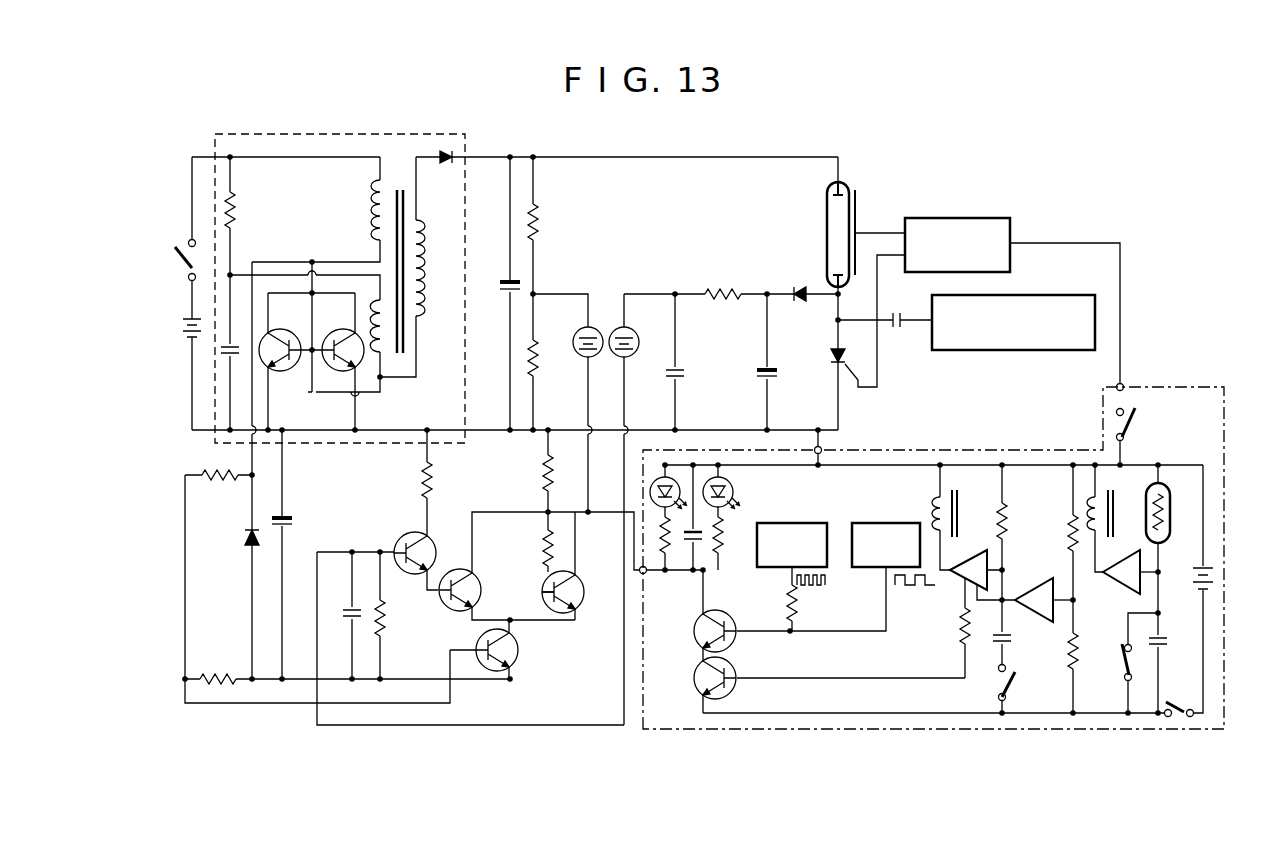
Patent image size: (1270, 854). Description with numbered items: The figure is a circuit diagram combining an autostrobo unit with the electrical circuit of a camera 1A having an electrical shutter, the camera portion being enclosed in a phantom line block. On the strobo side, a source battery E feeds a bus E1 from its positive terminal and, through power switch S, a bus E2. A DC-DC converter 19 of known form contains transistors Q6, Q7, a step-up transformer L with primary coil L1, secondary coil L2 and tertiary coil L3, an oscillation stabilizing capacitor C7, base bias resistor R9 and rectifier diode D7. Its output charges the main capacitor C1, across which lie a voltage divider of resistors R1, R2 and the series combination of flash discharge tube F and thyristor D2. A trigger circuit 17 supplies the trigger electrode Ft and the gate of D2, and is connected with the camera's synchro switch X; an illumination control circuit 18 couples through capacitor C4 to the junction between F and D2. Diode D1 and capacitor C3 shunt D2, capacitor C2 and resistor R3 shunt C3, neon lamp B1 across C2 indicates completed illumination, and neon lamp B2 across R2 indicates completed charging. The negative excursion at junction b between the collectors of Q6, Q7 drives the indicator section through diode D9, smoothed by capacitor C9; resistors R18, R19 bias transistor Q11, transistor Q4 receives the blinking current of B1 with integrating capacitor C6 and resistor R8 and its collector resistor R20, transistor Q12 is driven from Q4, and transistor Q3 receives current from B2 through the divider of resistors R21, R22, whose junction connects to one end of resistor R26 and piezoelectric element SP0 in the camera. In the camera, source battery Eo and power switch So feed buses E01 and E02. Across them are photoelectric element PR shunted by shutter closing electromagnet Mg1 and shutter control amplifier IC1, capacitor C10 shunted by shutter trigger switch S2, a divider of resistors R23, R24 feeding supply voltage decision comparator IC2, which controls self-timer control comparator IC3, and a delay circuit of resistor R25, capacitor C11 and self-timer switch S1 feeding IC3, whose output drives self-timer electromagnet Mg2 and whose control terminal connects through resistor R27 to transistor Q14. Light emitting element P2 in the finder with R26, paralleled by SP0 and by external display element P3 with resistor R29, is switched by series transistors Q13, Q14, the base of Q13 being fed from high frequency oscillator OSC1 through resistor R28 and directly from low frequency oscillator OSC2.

The DC-DC converter 19 is at (370, 133).
The bus E2 is at (317, 159).
The bus E1 is at (188, 440).
The power switch S is at (180, 258).
The source battery E is at (183, 325).
The base bias resistor R9 is at (236, 226).
The oscillation stabilizing capacitor C7 is at (214, 350).
The step-up transformer L is at (401, 184).
The tertiary coil L3 is at (370, 222).
The secondary coil L2 is at (425, 228).
The primary coil L1 is at (385, 368).
The rectifier diode D7 is at (447, 164).
The junction b is at (312, 340).
The transistor Q6 is at (283, 330).
The transistor Q7 is at (343, 330).
The main capacitor C1 is at (500, 285).
The resistor R1 is at (538, 232).
The resistor R2 is at (538, 366).
The neon lamp B2 is at (574, 336).
The neon lamp B1 is at (634, 333).
The resistor R3 is at (722, 291).
The capacitor C2 is at (684, 376).
The capacitor C3 is at (778, 374).
The diode D1 is at (792, 290).
The flash discharge tube F is at (826, 233).
The trigger electrode Ft is at (857, 200).
The main switching element D2 is at (830, 355).
The trigger circuit 17 is at (961, 218).
The capacitor C4 is at (897, 328).
The illumination control circuit 18 is at (1004, 351).
The switch X is at (1127, 425).
The resistor R18 is at (222, 480).
The diode D9 is at (242, 538).
The smoothing capacitor C9 is at (292, 521).
The resistor R19 is at (217, 677).
The capacitor C6 is at (346, 614).
The resistor R8 is at (386, 604).
The transistor Q4 is at (397, 540).
The resistor R20 is at (433, 486).
The resistor R21 is at (543, 480).
The resistor R22 is at (543, 548).
The transistor Q12 is at (479, 597).
The transistor Q3 is at (577, 601).
The transistor Q11 is at (516, 642).
The camera 1A is at (936, 730).
The bus E01 is at (827, 467).
The light emitting element P2 is at (650, 489).
The resistor R26 is at (669, 558).
The piezoelectric element SP0 is at (701, 575).
The light emitting element P3 is at (733, 492).
The resistor R29 is at (721, 553).
The transistor Q13 is at (736, 616).
The transistor Q14 is at (736, 667).
The bus E02 is at (868, 712).
The first oscillator OSC1 is at (791, 523).
The resistor R28 is at (798, 604).
The second oscillator OSC2 is at (880, 523).
The electromagnet Mg2 is at (932, 503).
The self-timer control comparator IC3 is at (978, 556).
The resistor R27 is at (960, 632).
The resistor R25 is at (1006, 520).
The supply voltage decision comparator IC2 is at (1036, 590).
The capacitor C11 is at (1008, 638).
The self-timer switch S1 is at (1011, 685).
The resistor R23 is at (1068, 538).
The resistor R24 is at (1078, 650).
The shutter closing electromagnet Mg1 is at (1086, 503).
The shutter control amplifier IC1 is at (1115, 586).
The photoelectric element PR is at (1173, 531).
The shutter trigger switch S2 is at (1124, 673).
The capacitor C10 is at (1166, 642).
The source battery Eo is at (1214, 580).
The power switch So is at (1181, 722).